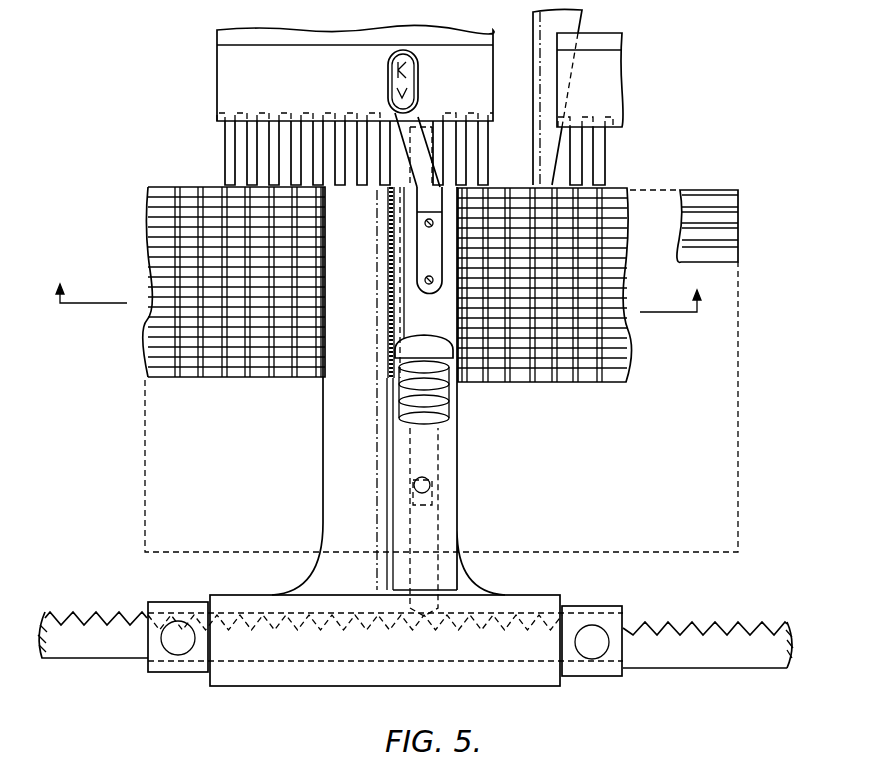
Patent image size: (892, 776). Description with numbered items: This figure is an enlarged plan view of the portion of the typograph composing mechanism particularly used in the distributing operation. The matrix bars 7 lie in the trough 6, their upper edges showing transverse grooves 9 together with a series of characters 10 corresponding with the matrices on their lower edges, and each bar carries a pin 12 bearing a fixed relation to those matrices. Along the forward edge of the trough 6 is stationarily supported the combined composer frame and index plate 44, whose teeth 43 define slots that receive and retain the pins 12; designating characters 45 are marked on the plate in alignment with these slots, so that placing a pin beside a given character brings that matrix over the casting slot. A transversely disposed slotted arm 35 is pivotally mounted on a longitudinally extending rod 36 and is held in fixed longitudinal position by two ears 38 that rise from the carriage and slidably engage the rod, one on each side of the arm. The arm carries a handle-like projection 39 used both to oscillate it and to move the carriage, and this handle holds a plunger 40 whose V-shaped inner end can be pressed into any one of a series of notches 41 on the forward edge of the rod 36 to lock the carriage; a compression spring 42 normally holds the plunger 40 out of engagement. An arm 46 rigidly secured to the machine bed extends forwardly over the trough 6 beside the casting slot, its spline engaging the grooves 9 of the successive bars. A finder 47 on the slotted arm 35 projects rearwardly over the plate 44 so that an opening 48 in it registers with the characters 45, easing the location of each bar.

The trough 6 is at (376, 298).
The matrix bars 7 is at (421, 302).
The transverse grooves 9 is at (175, 378).
The characters 10 is at (240, 181).
The pin 12 is at (385, 355).
The slotted arm 35 is at (322, 455).
The rod 36 is at (415, 647).
The ears 38 is at (598, 690).
The handle-like projection 39 is at (390, 470).
The plunger 40 is at (440, 447).
The notches 41 is at (705, 625).
The compression spring 42 is at (452, 404).
The teeth 43 is at (583, 158).
The combined composer frame and index plate 44 is at (419, 96).
The designating characters 45 is at (393, 97).
The arm 46 is at (543, 147).
The finder 47 is at (417, 116).
The opening 48 is at (397, 67).